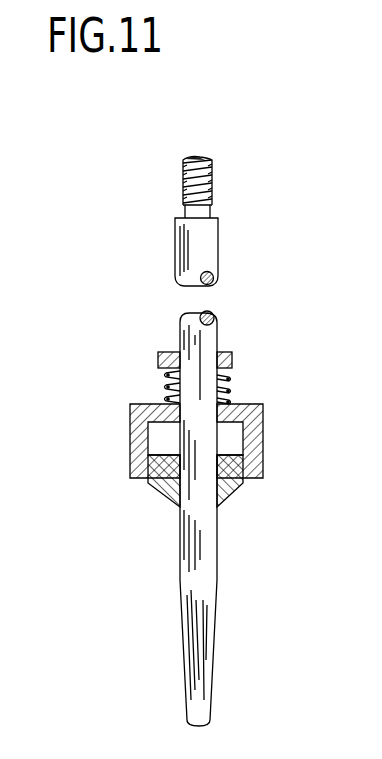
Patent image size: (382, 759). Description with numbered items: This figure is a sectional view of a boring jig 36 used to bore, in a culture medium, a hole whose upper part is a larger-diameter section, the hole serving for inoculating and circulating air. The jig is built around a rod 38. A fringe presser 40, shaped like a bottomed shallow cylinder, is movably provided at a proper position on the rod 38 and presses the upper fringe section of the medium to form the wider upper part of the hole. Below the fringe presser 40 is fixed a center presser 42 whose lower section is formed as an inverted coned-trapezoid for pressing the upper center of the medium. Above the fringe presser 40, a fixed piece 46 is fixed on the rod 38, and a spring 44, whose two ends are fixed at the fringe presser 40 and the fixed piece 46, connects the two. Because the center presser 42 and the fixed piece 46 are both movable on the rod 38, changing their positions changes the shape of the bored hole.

The boring jig 36 is at (222, 248).
The rod 38 is at (208, 588).
The fringe presser 40 is at (263, 452).
The center presser 42 is at (233, 490).
The spring 44 is at (230, 380).
The fixed piece 46 is at (232, 350).